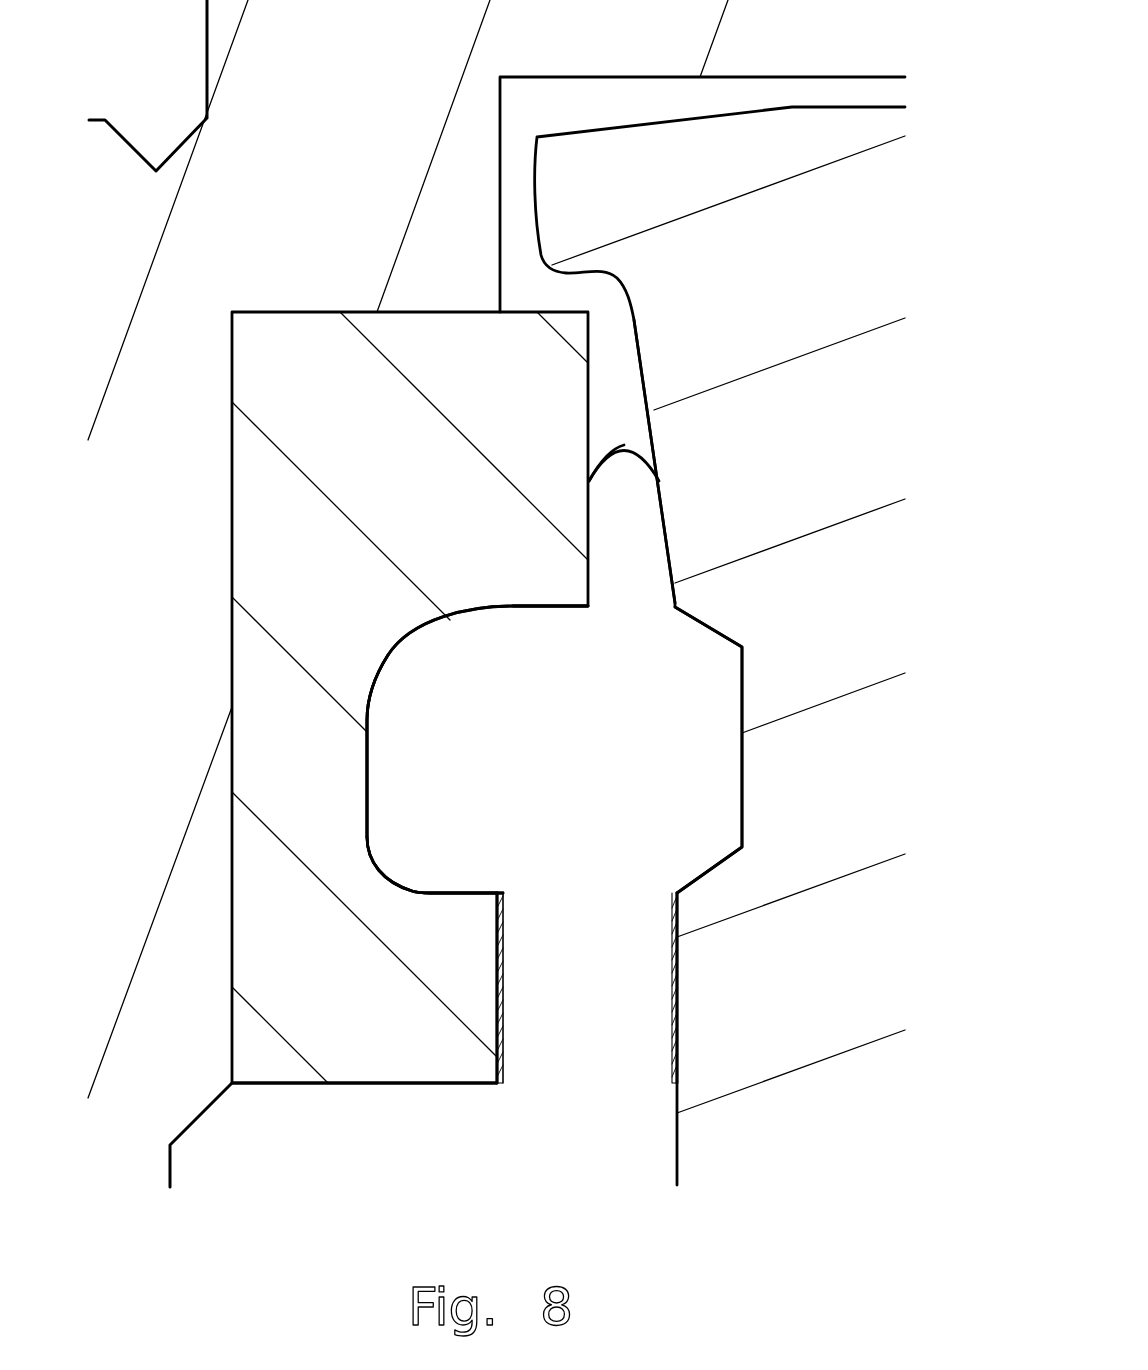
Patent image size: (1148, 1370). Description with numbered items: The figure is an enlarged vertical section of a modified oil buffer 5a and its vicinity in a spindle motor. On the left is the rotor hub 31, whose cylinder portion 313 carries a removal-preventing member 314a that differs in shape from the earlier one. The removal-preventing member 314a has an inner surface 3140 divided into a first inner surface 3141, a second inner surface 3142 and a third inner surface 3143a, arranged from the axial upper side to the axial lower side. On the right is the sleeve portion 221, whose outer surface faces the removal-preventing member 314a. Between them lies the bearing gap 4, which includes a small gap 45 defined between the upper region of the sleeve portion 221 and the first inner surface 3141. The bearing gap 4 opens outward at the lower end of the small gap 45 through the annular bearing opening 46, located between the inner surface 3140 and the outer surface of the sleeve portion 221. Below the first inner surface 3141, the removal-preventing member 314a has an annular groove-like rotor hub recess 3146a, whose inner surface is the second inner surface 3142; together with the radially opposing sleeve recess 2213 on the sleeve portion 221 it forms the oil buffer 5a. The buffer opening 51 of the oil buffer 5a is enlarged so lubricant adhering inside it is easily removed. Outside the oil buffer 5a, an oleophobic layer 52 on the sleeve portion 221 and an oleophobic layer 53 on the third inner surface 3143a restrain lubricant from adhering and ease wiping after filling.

The rotor hub 31 is at (394, 760).
The cylinder portion 313 is at (198, 1118).
The removal-preventing member 314a is at (363, 1068).
The inner surface 3140 is at (430, 680).
The first inner surface 3141 is at (604, 596).
The second inner surface 3142 is at (382, 735).
The third inner surface 3143a is at (514, 980).
The rotor hub recess 3146a is at (459, 750).
The bearing gap 4 is at (636, 698).
The small gap 45 is at (634, 594).
The bearing opening 46 is at (665, 625).
The oil buffer 5a is at (573, 831).
The buffer opening 51 is at (583, 910).
The oleophobic layer 52 is at (670, 1075).
The oleophobic layer 53 is at (503, 1060).
The sleeve portion 221 is at (677, 1172).
The sleeve recess 2213 is at (670, 785).